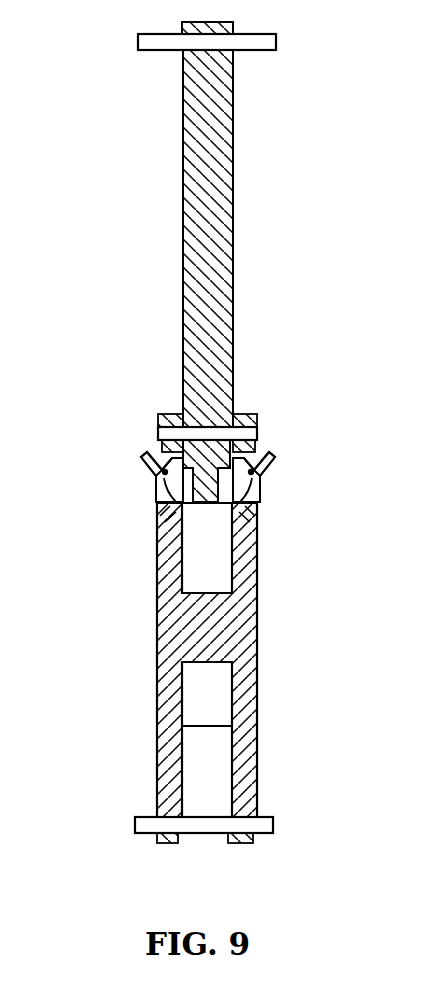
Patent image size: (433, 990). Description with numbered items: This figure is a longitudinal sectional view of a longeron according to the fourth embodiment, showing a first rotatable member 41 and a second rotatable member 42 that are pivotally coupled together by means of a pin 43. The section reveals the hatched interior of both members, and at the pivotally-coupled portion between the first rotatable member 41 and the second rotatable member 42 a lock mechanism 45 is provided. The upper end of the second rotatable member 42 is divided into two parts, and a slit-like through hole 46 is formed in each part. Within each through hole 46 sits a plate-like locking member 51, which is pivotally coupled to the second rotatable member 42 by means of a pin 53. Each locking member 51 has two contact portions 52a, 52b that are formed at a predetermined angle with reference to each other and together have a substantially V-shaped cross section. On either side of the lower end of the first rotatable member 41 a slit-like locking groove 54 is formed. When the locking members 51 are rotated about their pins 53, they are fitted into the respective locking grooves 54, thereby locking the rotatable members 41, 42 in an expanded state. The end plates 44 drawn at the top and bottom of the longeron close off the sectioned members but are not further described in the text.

The first rotatable member 41 is at (233, 240).
The second rotatable member 42 is at (257, 700).
The pin 43 is at (257, 432).
The end plate 44 is at (253, 33).
The lock mechanism 45 is at (118, 483).
The through hole 46 is at (178, 413).
The locking member 51 is at (160, 518).
The contact portion 52a is at (146, 466).
The contact portion 52b is at (152, 498).
The pin 53 is at (158, 456).
The locking groove 54 is at (160, 530).